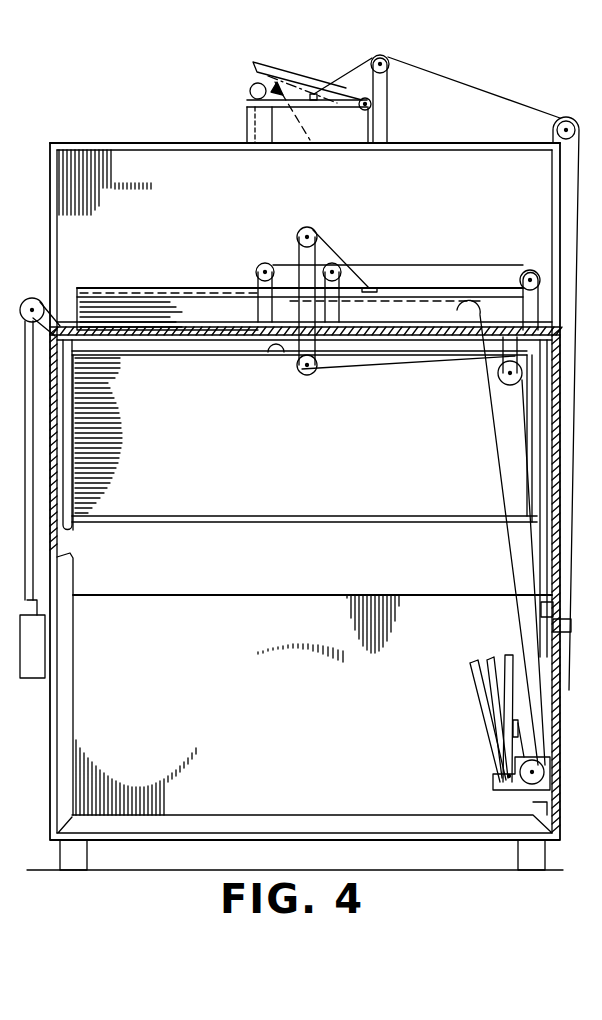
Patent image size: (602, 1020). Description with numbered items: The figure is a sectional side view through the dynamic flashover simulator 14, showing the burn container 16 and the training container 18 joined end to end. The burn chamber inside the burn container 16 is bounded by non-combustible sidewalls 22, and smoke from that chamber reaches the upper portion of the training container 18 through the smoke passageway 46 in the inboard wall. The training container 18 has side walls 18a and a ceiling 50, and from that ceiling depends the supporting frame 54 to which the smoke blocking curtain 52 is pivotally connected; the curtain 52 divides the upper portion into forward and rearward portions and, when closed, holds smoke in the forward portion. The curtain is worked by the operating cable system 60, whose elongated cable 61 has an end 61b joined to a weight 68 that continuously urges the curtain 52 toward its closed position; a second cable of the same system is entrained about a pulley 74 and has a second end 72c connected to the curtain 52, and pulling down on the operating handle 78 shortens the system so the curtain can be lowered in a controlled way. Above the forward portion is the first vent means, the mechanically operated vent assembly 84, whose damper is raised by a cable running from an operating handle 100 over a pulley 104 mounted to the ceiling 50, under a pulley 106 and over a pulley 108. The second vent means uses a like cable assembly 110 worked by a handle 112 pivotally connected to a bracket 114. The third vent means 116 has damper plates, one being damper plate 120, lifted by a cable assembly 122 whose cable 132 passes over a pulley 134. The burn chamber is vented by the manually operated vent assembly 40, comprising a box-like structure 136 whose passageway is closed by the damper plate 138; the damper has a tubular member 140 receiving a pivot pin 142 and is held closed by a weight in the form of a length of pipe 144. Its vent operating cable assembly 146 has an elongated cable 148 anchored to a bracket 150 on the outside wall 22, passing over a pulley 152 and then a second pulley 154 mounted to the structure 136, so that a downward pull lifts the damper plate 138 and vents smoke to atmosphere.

The dynamic flashover simulator 14 is at (94, 128).
The burn container 16 is at (173, 140).
The training container 18 is at (93, 782).
The side walls 18a is at (553, 545).
The non-combustible sidewalls 22 is at (50, 165).
The manually operated vent assembly 40 is at (247, 80).
The smoke passageway 46 is at (238, 596).
The ceiling 50 is at (436, 342).
The blocking curtain 52 is at (296, 480).
The supporting frame 54 is at (88, 440).
The operating cable system 60 is at (498, 458).
The elongated cable 61 is at (57, 545).
The cable end 61b is at (37, 614).
The weight 68 is at (33, 643).
The second end of second cable 72c is at (272, 355).
The pulley 74 is at (31, 300).
The operating handle 78 is at (494, 685).
The vent assembly 84 is at (280, 248).
The operating handle 100 is at (488, 720).
The pulley 104 is at (447, 312).
The pulley 106 is at (237, 354).
The pulley 108 is at (318, 231).
The cable assembly 110 is at (342, 252).
The handle 112 is at (508, 652).
The bracket 114 is at (492, 782).
The third vent means 116 is at (250, 257).
The damper plate 120 is at (132, 313).
The cable assembly 122 is at (446, 268).
The second cable 132 is at (540, 575).
The pulley 134 is at (257, 269).
The box-like structure 136 is at (243, 122).
The damper plate 138 is at (271, 108).
The tubular-shaped member 140 is at (364, 110).
The pivot pin 142 is at (386, 108).
The pipe 144 is at (250, 92).
The cable assembly 146 is at (490, 90).
The elongated cable 148 is at (578, 213).
The bracket 150 is at (553, 625).
The pulley 152 is at (556, 127).
The pulley 154 is at (390, 63).